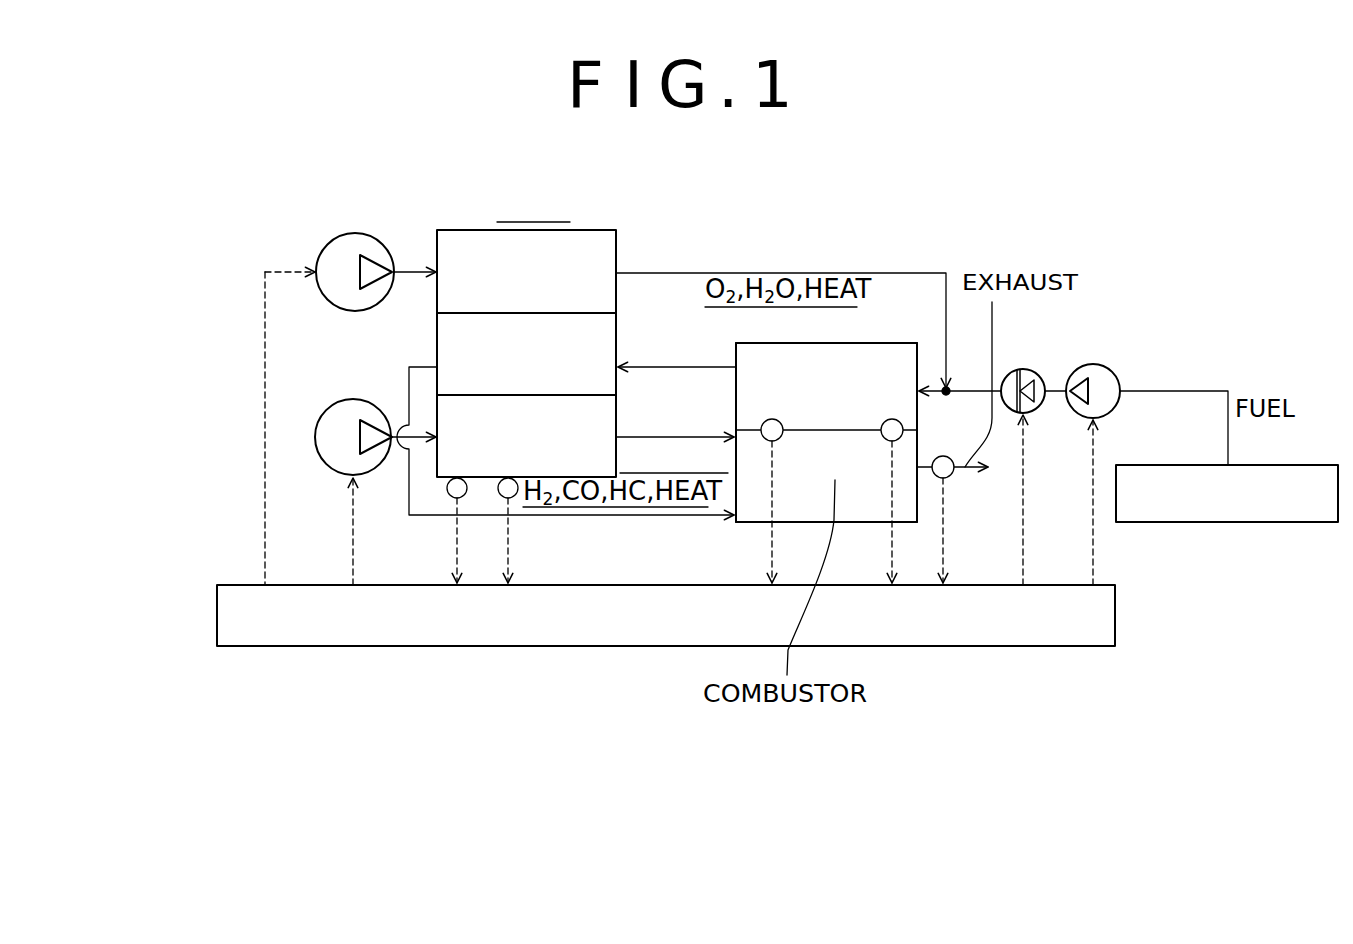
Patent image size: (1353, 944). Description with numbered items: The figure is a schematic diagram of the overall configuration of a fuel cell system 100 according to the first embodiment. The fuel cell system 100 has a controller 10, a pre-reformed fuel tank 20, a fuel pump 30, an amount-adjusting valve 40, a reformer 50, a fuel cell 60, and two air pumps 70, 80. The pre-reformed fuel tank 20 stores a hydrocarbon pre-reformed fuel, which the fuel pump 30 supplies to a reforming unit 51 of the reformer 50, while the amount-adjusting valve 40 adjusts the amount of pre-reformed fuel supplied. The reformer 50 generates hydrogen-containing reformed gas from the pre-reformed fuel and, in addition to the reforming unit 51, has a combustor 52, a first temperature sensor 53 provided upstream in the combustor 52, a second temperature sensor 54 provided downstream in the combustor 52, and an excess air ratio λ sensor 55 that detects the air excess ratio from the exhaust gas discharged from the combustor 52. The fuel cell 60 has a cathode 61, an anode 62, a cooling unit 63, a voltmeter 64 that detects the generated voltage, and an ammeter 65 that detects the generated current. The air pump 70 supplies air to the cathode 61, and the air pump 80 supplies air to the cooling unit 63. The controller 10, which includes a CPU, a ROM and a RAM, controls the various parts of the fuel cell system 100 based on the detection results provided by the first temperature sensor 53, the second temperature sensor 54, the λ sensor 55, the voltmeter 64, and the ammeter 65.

The controller 10 is at (922, 647).
The pre-reformed fuel tank 20 is at (1225, 522).
The fuel pump 30 is at (1100, 364).
The amount-adjusting valve 40 is at (1023, 369).
The reformer 50 is at (883, 332).
The reforming unit 51 is at (743, 343).
The combustor 52 is at (737, 498).
The first temperature sensor 53 is at (763, 419).
The second temperature sensor 54 is at (901, 420).
The excess air ratio λ sensor 55 is at (950, 477).
The fuel cell 60 is at (692, 203).
The cathode 61 is at (600, 230).
The anode 62 is at (618, 347).
The cooling unit 63 is at (618, 413).
The voltmeter 64 is at (448, 494).
The ammeter 65 is at (500, 497).
The air pump 70 is at (355, 233).
The air pump 80 is at (353, 399).
The fuel cell system 100 is at (1050, 222).